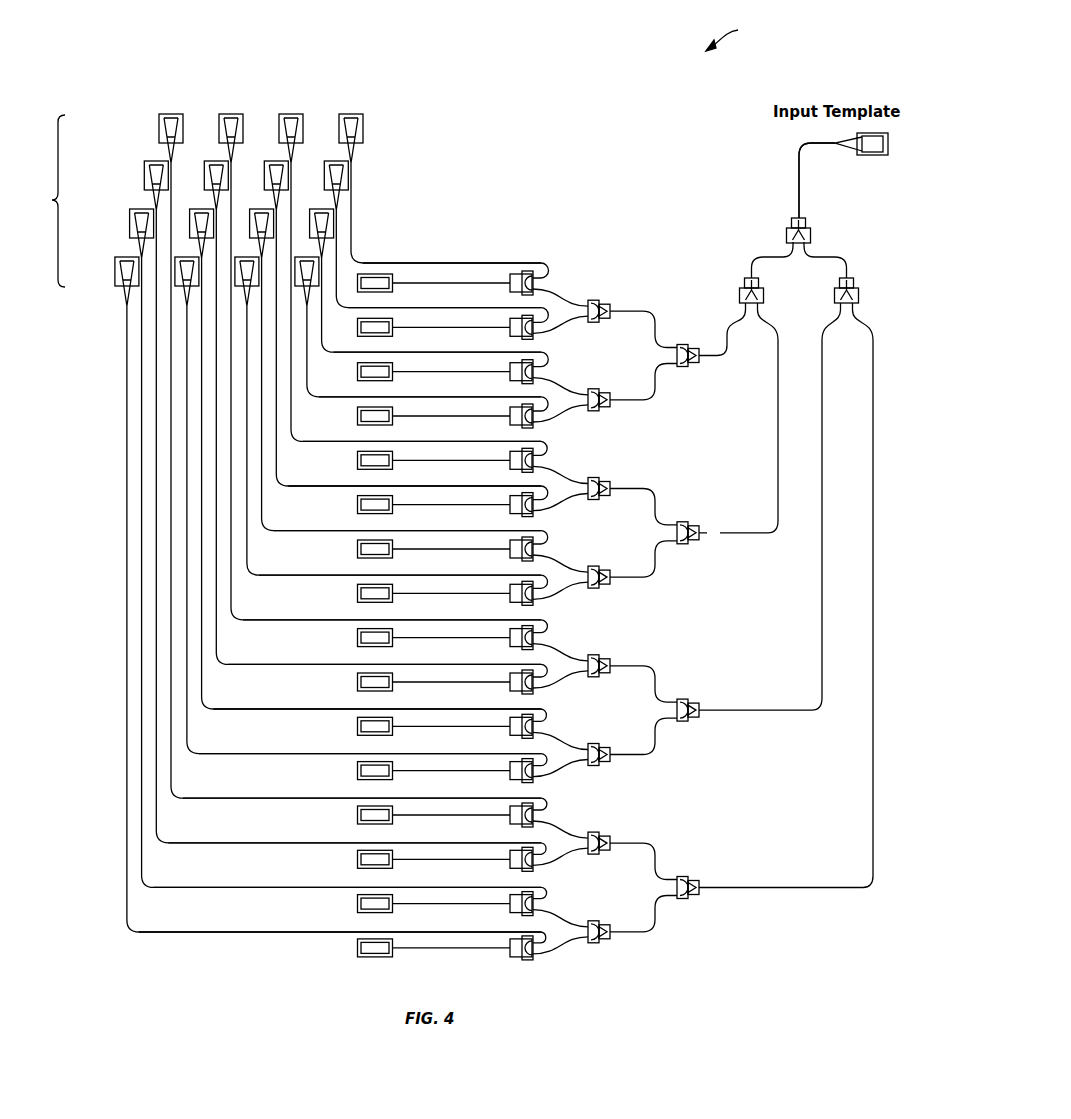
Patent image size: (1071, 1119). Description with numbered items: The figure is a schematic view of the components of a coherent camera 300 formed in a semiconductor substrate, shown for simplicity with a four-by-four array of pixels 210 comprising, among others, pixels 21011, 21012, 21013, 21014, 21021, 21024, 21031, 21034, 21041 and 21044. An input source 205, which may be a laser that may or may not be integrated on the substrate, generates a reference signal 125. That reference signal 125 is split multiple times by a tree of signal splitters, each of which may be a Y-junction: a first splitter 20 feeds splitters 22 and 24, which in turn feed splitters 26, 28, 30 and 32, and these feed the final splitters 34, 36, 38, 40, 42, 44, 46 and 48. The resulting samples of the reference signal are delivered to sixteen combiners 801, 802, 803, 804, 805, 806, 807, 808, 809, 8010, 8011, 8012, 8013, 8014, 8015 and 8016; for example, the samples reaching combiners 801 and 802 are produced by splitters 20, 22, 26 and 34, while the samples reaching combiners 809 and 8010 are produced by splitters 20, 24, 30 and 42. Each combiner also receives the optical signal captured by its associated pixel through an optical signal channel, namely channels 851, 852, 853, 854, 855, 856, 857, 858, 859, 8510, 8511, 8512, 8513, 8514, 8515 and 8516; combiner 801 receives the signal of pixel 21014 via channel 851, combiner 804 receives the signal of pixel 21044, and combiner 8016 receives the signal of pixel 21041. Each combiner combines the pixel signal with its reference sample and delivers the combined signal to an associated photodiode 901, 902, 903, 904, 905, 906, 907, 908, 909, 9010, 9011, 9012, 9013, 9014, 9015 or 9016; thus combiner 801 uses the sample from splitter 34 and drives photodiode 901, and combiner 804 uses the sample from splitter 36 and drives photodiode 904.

The coherent camera 300 is at (733, 32).
The reference signal 125 is at (797, 162).
The input source 205 is at (872, 158).
The signal splitter 20 is at (787, 232).
The signal splitter 22 is at (742, 285).
The signal splitter 24 is at (858, 285).
The signal splitter 26 is at (680, 344).
The signal splitter 28 is at (680, 522).
The signal splitter 30 is at (680, 699).
The signal splitter 32 is at (680, 876).
The signal splitter 34 is at (598, 302).
The signal splitter 36 is at (598, 391).
The signal splitter 38 is at (598, 480).
The signal splitter 40 is at (598, 568).
The signal splitter 42 is at (598, 657).
The signal splitter 44 is at (598, 746).
The signal splitter 46 is at (598, 834).
The signal splitter 48 is at (598, 923).
The combiner 801 is at (540, 280).
The combiner 802 is at (537, 337).
The combiner 803 is at (540, 369).
The combiner 804 is at (537, 426).
The combiner 805 is at (540, 457).
The combiner 806 is at (537, 515).
The combiner 807 is at (540, 546).
The combiner 808 is at (537, 603).
The combiner 809 is at (540, 635).
The combiner 8010 is at (537, 692).
The combiner 8011 is at (540, 723).
The combiner 8012 is at (537, 781).
The combiner 8013 is at (540, 812).
The combiner 8014 is at (537, 869).
The combiner 8015 is at (540, 901).
The combiner 8016 is at (537, 958).
The optical channel 851 is at (477, 263).
The optical channel 852 is at (455, 307).
The optical channel 853 is at (435, 352).
The optical channel 854 is at (435, 397).
The optical channel 855 is at (435, 441).
The optical channel 856 is at (435, 486).
The optical channel 857 is at (435, 531).
The optical channel 858 is at (435, 575).
The optical channel 859 is at (435, 620).
The optical channel 8510 is at (435, 664).
The optical channel 8511 is at (435, 709).
The optical channel 8512 is at (435, 754).
The optical channel 8513 is at (435, 798).
The optical channel 8514 is at (435, 843).
The optical channel 8515 is at (435, 887).
The optical channel 8516 is at (435, 932).
The photodiode 901 is at (393, 280).
The photodiode 902 is at (393, 324).
The photodiode 903 is at (357, 372).
The photodiode 904 is at (357, 416).
The photodiode 905 is at (357, 460).
The photodiode 906 is at (357, 505).
The photodiode 907 is at (357, 549).
The photodiode 908 is at (357, 593).
The photodiode 909 is at (357, 638).
The photodiode 9010 is at (357, 682).
The photodiode 9011 is at (357, 726).
The photodiode 9012 is at (357, 771).
The photodiode 9013 is at (357, 815).
The photodiode 9014 is at (357, 859).
The photodiode 9015 is at (357, 904).
The photodiode 9016 is at (357, 948).
The array of pixels 210 is at (224, 184).
The pixel 21011 is at (159, 128).
The pixel 21012 is at (229, 113).
The pixel 21013 is at (287, 113).
The pixel 21014 is at (350, 113).
The pixel 21021 is at (144, 176).
The pixel 21024 is at (348, 178).
The pixel 21031 is at (129, 224).
The pixel 21034 is at (334, 222).
The pixel 21041 is at (115, 271).
The pixel 21044 is at (319, 270).